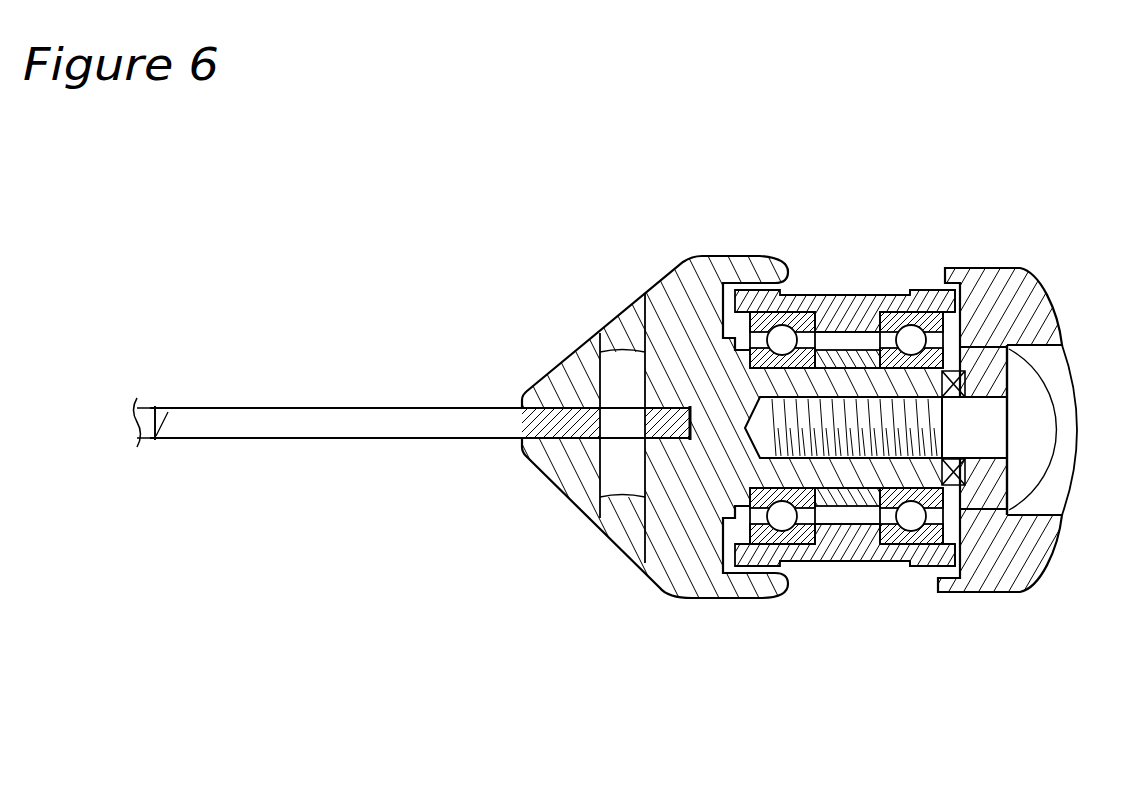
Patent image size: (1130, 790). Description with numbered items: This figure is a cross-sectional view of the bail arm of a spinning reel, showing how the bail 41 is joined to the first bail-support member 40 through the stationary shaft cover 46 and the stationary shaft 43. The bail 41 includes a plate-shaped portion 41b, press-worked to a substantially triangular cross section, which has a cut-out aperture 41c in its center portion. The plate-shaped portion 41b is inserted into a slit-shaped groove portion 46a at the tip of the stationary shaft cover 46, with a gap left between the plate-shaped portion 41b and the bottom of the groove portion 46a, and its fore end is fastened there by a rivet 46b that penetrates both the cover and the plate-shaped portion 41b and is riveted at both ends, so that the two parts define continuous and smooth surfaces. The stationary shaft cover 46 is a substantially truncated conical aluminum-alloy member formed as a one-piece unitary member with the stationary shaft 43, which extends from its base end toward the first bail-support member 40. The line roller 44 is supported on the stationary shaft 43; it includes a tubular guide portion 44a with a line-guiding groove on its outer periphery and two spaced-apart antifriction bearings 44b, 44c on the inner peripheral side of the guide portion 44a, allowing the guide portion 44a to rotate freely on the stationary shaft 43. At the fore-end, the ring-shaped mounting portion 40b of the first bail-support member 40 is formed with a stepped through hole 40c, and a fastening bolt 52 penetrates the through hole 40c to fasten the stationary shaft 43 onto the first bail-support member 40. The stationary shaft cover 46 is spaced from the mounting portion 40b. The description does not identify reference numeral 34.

The shaft 34 is at (940, 603).
The first bail-support member 40 is at (1030, 590).
The mounting portion 40b is at (1040, 552).
The through hole 40c is at (1070, 492).
The bail 41 is at (242, 400).
The plate-shaped portion 41b is at (415, 422).
The aperture 41c is at (160, 422).
The stationary shaft 43 is at (868, 455).
The line roller 44 is at (868, 288).
The guide portion 44a is at (848, 296).
The antifriction bearing 44b is at (768, 292).
The antifriction bearing 44c is at (928, 292).
The stationary shaft cover 46 is at (683, 268).
The groove portion 46a is at (585, 425).
The rivet 46b is at (627, 308).
The fastening bolt 52 is at (1018, 378).